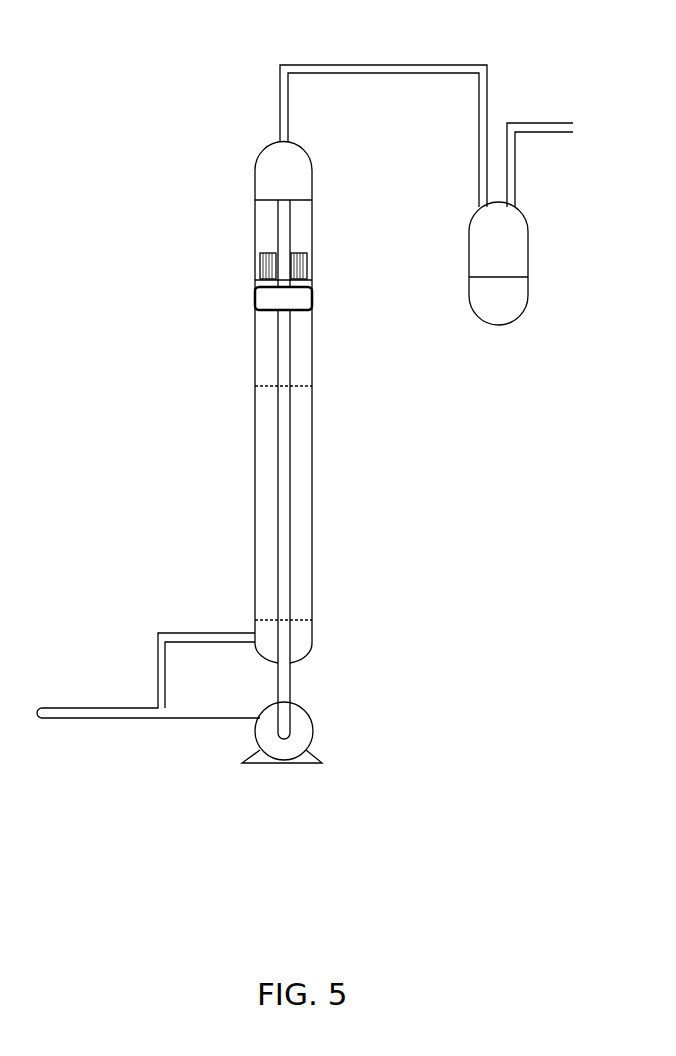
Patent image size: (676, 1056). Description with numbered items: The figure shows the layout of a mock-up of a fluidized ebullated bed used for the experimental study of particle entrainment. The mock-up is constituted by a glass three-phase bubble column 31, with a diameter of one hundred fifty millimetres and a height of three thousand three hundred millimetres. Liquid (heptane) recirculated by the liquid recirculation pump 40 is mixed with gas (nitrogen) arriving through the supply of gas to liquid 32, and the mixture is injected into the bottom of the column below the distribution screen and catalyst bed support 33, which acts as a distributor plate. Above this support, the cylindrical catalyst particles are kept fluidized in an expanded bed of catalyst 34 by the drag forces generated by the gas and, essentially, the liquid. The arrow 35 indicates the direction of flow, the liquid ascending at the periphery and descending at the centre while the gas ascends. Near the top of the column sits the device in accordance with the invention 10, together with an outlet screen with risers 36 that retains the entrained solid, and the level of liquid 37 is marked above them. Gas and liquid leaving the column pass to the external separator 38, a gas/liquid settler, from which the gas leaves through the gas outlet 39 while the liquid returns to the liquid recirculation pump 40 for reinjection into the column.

The device in accordance with the invention 10 is at (254, 298).
The three-phase bubble column 31 is at (314, 503).
The supply of gas to liquid 32 is at (158, 708).
The distribution screen and catalyst bed support 33 is at (314, 620).
The bed of catalyst 34 is at (297, 558).
The direction of liquid and gas 35 is at (221, 485).
The outlet screen with risers 36 is at (258, 253).
The level of liquid 37 is at (303, 197).
The external separator 38 is at (468, 250).
The gas outlet 39 is at (573, 134).
The liquid recirculation pump 40 is at (314, 730).